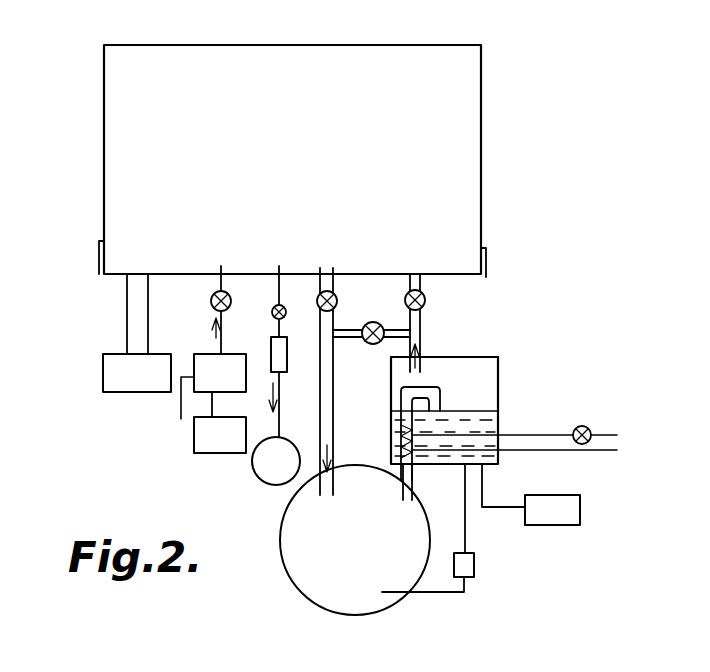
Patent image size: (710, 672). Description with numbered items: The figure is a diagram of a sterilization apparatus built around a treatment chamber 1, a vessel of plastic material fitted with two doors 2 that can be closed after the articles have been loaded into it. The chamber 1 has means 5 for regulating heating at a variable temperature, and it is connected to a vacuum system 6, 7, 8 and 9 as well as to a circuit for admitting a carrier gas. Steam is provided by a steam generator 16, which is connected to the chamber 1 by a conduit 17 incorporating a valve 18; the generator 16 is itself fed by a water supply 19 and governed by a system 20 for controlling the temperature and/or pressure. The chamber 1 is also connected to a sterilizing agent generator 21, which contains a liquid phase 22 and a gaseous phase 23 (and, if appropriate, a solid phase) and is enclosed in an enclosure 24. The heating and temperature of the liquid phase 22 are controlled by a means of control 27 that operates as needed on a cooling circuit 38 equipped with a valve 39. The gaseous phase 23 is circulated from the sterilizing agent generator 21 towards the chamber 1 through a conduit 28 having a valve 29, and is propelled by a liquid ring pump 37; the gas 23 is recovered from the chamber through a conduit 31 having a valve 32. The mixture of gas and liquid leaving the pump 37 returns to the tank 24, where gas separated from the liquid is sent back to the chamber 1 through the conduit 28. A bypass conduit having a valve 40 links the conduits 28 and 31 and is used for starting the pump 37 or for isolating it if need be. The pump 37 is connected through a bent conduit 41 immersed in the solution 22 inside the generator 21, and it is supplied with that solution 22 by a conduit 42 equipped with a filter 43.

The treatment chamber 1 is at (329, 58).
The doors 2 is at (104, 131).
The means for regulating heating 5 is at (130, 386).
The vacuum system component 6 is at (268, 478).
The vacuum system component 7 is at (279, 288).
The vacuum system component 8 is at (273, 313).
The vacuum system component 9 is at (287, 361).
The steam generator 16 is at (206, 366).
The conduit 17 is at (222, 336).
The valve 18 is at (210, 302).
The water supply 19 is at (180, 407).
The control system 20 is at (202, 434).
The sterilizing agent generator 21 is at (480, 406).
The liquid phase 22 is at (499, 426).
The gaseous phase 23 is at (471, 398).
The enclosure 24 is at (486, 353).
The means of control 27 is at (580, 520).
The conduit 28 is at (421, 329).
The valve 29 is at (427, 300).
The conduit 31 is at (310, 381).
The valve 32 is at (322, 310).
The liquid ring pump 37 is at (330, 600).
The cooling circuit 38 is at (600, 452).
The valve 39 is at (591, 428).
The valve 40 is at (371, 346).
The bent conduit 41 is at (412, 483).
The conduit 42 is at (466, 535).
The filter 43 is at (474, 572).